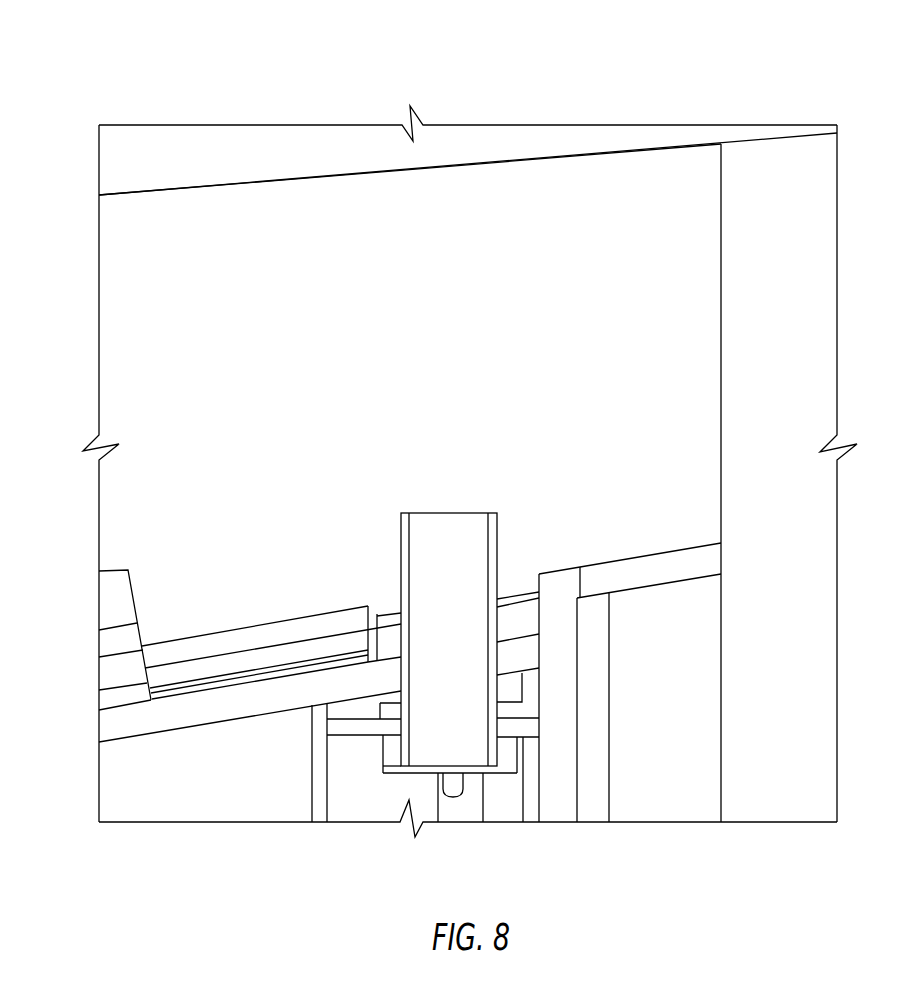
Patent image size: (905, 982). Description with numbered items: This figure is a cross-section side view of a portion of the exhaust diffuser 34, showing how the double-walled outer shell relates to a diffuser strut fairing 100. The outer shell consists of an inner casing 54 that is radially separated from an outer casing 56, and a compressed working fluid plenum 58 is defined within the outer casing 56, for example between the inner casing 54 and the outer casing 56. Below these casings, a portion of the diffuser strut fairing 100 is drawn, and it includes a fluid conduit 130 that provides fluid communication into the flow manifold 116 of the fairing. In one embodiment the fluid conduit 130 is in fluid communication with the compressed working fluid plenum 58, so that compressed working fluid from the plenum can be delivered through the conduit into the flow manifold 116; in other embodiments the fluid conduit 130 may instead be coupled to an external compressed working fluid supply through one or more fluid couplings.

The exhaust diffuser 34 is at (660, 78).
The inner casing 54 is at (132, 715).
The outer casing 56 is at (450, 125).
The compressed working fluid plenum 58 is at (273, 351).
The diffuser strut fairing 100 is at (305, 803).
The flow manifold 116 is at (402, 800).
The fluid conduit 130 is at (469, 720).